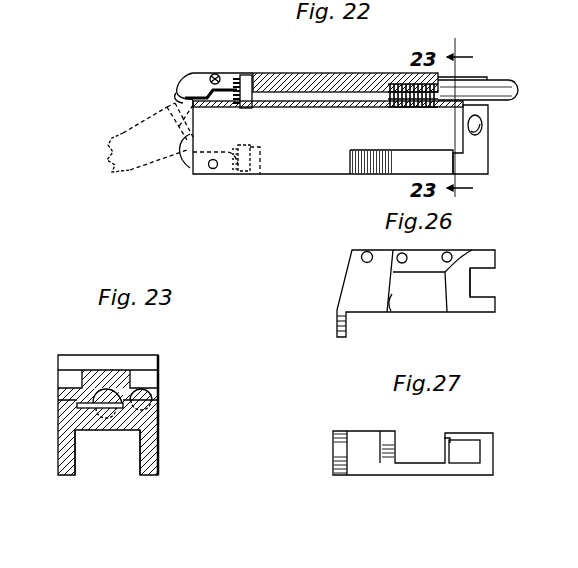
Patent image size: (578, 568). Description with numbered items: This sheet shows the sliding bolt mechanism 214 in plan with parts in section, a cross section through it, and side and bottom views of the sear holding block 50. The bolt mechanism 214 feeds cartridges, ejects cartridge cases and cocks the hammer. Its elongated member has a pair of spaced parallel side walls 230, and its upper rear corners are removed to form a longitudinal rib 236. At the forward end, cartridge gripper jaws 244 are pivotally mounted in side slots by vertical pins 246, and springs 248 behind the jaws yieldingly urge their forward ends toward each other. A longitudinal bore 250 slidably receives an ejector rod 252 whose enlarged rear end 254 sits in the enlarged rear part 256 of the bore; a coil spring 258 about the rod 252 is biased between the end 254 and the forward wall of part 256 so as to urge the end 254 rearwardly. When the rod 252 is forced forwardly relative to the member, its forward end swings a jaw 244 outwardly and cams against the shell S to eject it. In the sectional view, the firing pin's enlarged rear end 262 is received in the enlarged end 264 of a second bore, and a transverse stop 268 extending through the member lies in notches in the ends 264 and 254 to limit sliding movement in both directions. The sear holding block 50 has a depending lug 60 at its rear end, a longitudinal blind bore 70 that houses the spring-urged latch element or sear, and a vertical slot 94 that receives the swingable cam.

In FIG. 22, the cartridge gripper jaws 244 is at (197, 73).
In FIG. 22, the vertical pins 246 is at (218, 73).
In FIG. 22, the springs 248 is at (243, 76).
In FIG. 22, the longitudinal bore 250 is at (336, 84).
In FIG. 22, the ejector rod 252 is at (333, 99).
In FIG. 22, the enlarged rear end 254 is at (520, 90).
In FIG. 23, the enlarged rear end 254 is at (151, 395).
In FIG. 22, the enlarged rear part of bore 256 is at (463, 78).
In FIG. 23, the enlarged rear part of bore 256 is at (147, 386).
In FIG. 22, the coil spring 258 is at (414, 107).
In FIG. 22, the shell S is at (120, 126).
In FIG. 26, the sear holding block 50 is at (357, 283).
In FIG. 27, the sear holding block 50 is at (483, 460).
In FIG. 26, the lug 60 is at (338, 334).
In FIG. 27, the lug 60 is at (336, 456).
In FIG. 26, the longitudinal blind bore 70 is at (490, 275).
In FIG. 27, the longitudinal blind bore 70 is at (388, 458).
In FIG. 26, the vertical slot 94 is at (390, 309).
In FIG. 27, the vertical slot 94 is at (448, 437).
In FIG. 23, the sliding bolt mechanism 214 is at (57, 415).
In FIG. 23, the side walls 230 is at (146, 460).
In FIG. 23, the longitudinal rib 236 is at (98, 384).
In FIG. 23, the enlarged rear end of firing pin 262 is at (82, 401).
In FIG. 23, the enlarged end of bore 264 is at (94, 397).
In FIG. 23, the transverse stop 268 is at (108, 413).